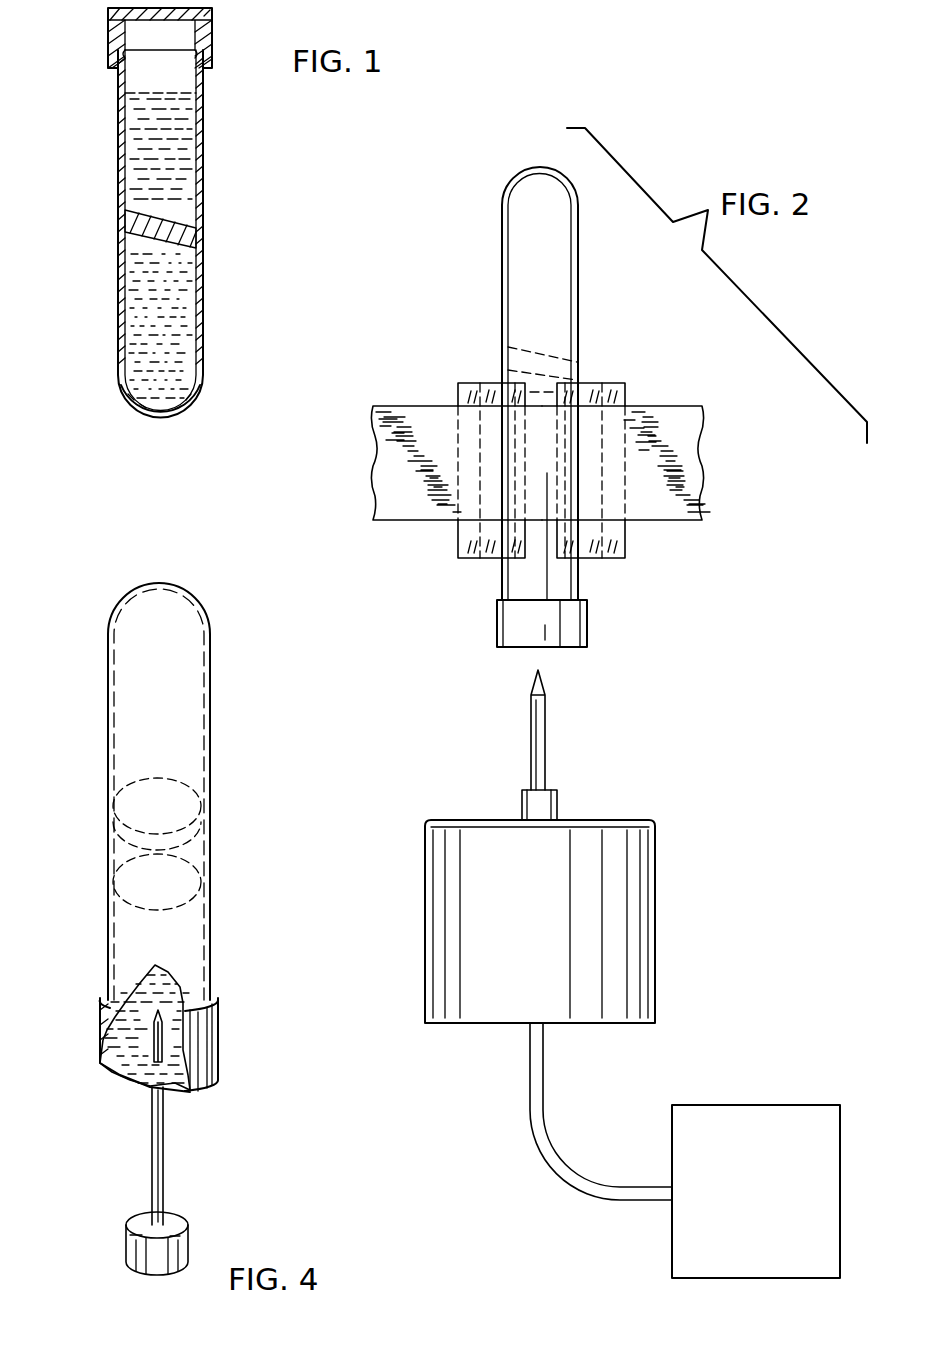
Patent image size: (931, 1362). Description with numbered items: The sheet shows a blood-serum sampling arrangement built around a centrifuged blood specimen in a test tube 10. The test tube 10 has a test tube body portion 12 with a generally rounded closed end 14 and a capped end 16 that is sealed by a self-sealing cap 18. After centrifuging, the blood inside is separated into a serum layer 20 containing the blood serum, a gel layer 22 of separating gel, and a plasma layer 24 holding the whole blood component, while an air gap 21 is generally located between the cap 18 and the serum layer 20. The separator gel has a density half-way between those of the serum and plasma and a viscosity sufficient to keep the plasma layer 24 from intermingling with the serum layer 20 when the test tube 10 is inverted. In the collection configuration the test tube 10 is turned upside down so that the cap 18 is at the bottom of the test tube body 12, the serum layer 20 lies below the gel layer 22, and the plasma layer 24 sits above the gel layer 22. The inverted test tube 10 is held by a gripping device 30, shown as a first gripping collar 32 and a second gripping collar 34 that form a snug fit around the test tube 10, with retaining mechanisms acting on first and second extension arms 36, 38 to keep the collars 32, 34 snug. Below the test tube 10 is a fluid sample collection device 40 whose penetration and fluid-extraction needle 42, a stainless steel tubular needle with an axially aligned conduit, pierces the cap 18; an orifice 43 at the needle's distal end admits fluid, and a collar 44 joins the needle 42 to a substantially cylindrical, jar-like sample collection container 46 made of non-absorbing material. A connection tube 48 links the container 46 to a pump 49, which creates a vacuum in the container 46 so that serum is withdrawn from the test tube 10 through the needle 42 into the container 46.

In FIG. 1, the test tube 10 is at (88, 230).
In FIG. 2, the test tube 10 is at (487, 255).
In FIG. 4, the test tube 10 is at (88, 775).
In FIG. 1, the test tube body portion 12 is at (119, 309).
In FIG. 2, the test tube body portion 12 is at (580, 256).
In FIG. 1, the rounded closed end 14 is at (126, 400).
In FIG. 1, the capped end 16 is at (93, 51).
In FIG. 1, the self-sealing cap 18 is at (212, 25).
In FIG. 2, the self-sealing cap 18 is at (497, 628).
In FIG. 4, the self-sealing cap 18 is at (218, 1040).
In FIG. 1, the serum layer 20 is at (188, 179).
In FIG. 2, the serum layer 20 is at (511, 584).
In FIG. 4, the serum layer 20 is at (193, 942).
In FIG. 1, the air gap 21 is at (183, 77).
In FIG. 2, the air gap 21 is at (503, 373).
In FIG. 4, the air gap 21 is at (198, 860).
In FIG. 1, the gel layer 22 is at (195, 232).
In FIG. 2, the gel layer 22 is at (548, 358).
In FIG. 4, the gel layer 22 is at (186, 817).
In FIG. 1, the plasma layer 24 is at (188, 309).
In FIG. 2, the plasma layer 24 is at (525, 321).
In FIG. 4, the plasma layer 24 is at (194, 743).
In FIG. 2, the gripping device 30 is at (407, 385).
In FIG. 2, the first gripping collar 32 is at (463, 382).
In FIG. 2, the second gripping collar 34 is at (618, 383).
In FIG. 2, the first extension arm 36 is at (385, 435).
In FIG. 2, the second extension arm 38 is at (683, 450).
In FIG. 4, the fluid sample collection device 40 is at (642, 790).
In FIG. 4, the penetration and fluid-extraction needle 42 is at (546, 727).
In FIG. 4, the orifice 43 is at (142, 1045).
In FIG. 4, the collar 44 is at (557, 797).
In FIG. 4, the sample collection container 46 is at (633, 875).
In FIG. 4, the connection tube 48 is at (563, 1152).
In FIG. 4, the pump 49 is at (745, 1216).